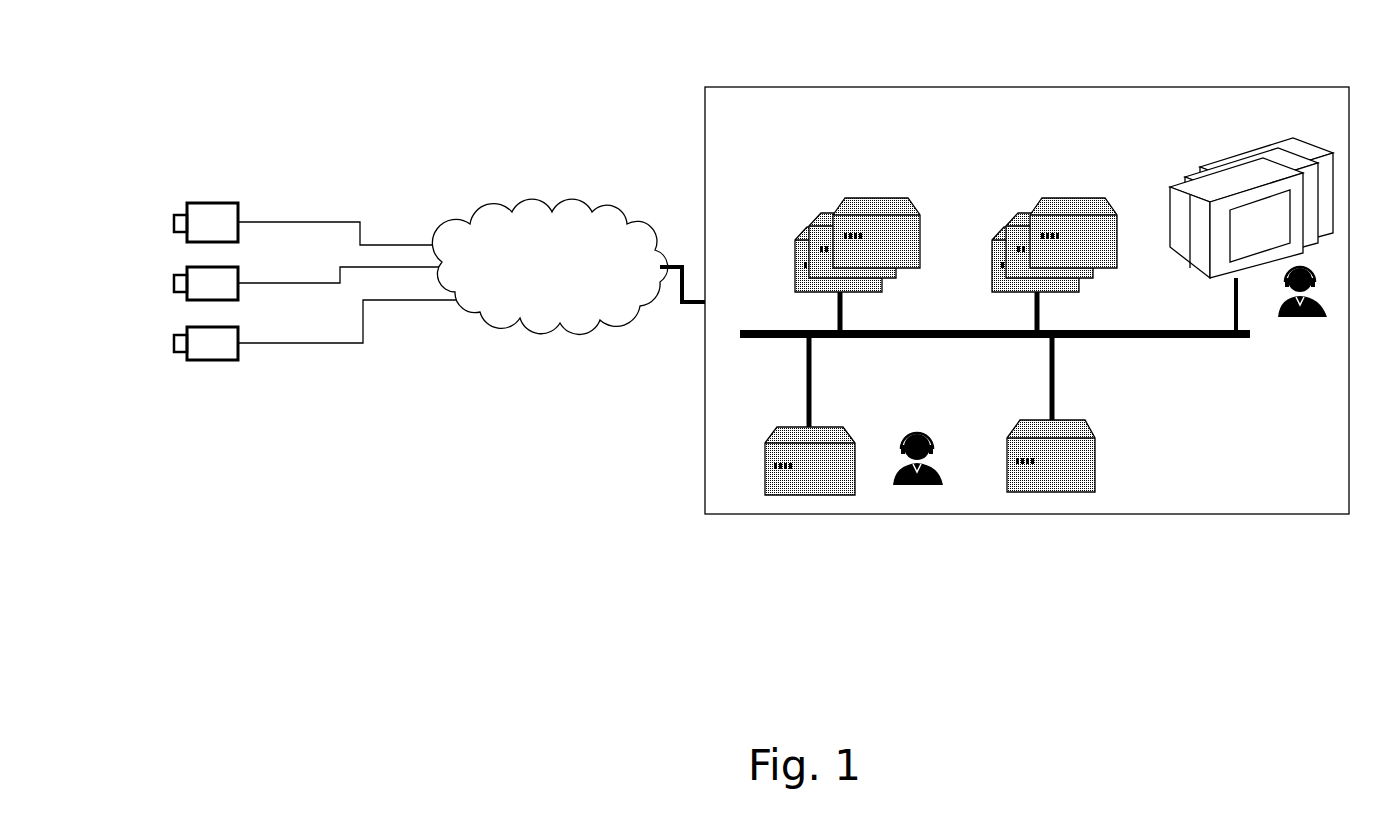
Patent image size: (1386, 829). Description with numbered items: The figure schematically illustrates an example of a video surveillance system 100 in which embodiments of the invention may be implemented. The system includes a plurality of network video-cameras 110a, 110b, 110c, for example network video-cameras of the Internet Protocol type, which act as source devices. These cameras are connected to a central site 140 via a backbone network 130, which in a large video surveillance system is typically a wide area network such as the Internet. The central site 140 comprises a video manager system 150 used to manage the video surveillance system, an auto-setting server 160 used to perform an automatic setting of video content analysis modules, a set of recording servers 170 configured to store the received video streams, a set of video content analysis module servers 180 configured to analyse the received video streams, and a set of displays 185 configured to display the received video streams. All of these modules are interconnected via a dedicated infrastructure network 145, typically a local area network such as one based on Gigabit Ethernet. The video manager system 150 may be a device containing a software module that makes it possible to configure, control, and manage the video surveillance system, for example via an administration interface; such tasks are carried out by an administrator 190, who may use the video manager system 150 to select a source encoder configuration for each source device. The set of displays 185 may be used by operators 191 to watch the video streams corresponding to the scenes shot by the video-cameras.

The video surveillance system 100 is at (335, 59).
The network video-camera 110a is at (174, 222).
The network video-camera 110b is at (174, 285).
The network video-camera 110c is at (174, 343).
The backbone network 130 is at (560, 205).
The central site 140 is at (925, 88).
The dedicated infrastructure network 145 is at (1115, 340).
The video manager system 150 is at (792, 428).
The auto-setting server 160 is at (1095, 455).
The recording server 170 is at (817, 217).
The video content analysis module server 180 is at (1012, 217).
The display 185 is at (1194, 177).
The administrator 190 is at (928, 430).
The operator 191 is at (1305, 320).